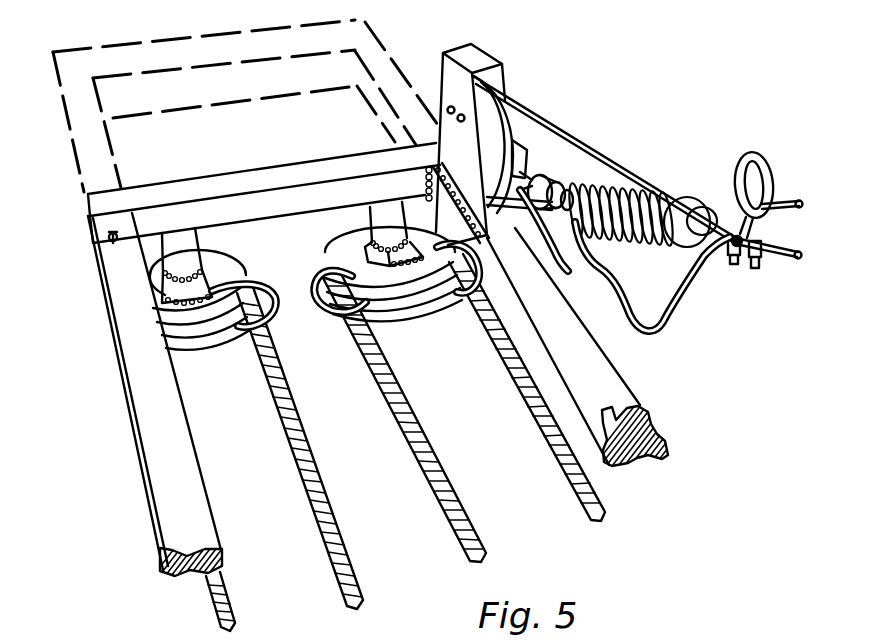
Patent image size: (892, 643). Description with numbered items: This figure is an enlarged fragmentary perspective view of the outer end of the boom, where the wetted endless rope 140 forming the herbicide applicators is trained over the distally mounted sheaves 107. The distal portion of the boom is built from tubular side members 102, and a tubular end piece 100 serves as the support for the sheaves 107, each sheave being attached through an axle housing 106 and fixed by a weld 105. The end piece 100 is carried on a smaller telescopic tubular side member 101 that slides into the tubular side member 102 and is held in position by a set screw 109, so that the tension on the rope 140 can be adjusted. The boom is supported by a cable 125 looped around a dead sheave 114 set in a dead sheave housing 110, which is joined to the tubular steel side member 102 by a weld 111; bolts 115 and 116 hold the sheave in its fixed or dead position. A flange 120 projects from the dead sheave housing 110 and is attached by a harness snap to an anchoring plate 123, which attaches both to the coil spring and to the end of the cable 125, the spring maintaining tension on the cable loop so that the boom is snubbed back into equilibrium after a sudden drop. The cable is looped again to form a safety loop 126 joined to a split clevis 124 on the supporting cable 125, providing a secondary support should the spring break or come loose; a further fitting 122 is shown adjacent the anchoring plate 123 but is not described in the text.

The tubular end piece 100 is at (218, 33).
The telescopic tubular side member 101 is at (376, 29).
The tubular side member 102 is at (148, 418).
The weld 105 is at (203, 268).
The axle housing 106 is at (180, 251).
The sheave 107 is at (343, 259).
The set screw 109 is at (108, 243).
The dead sheave housing 110 is at (506, 75).
The weld 111 is at (487, 240).
The dead sheave 114 is at (488, 143).
The bolt 115 is at (457, 100).
The bolt 116 is at (453, 112).
The flange 120 is at (519, 139).
The hub 122 is at (532, 167).
The anchoring plate 123 is at (568, 178).
The split clevis 124 is at (773, 221).
The cable 125 is at (785, 259).
The safety loop 126 is at (672, 325).
The rope 140 is at (229, 588).